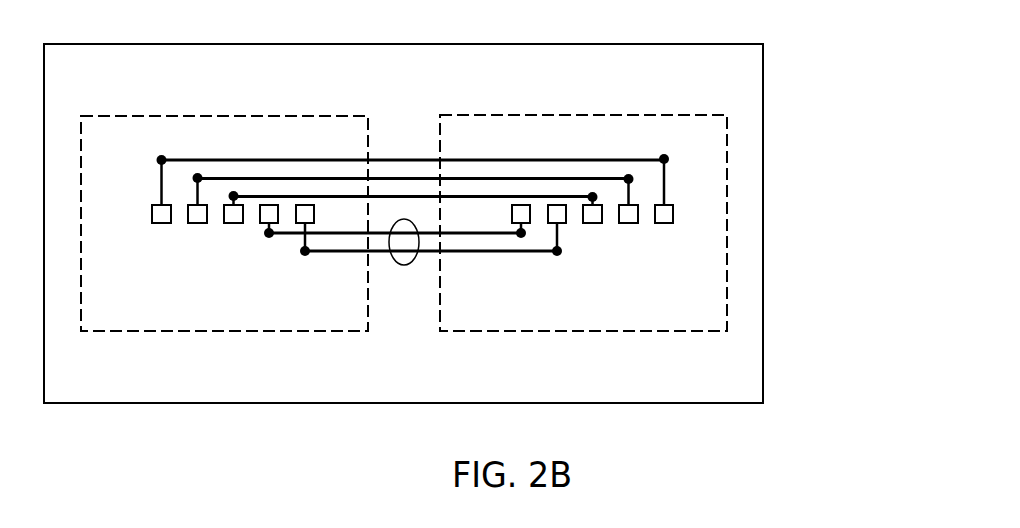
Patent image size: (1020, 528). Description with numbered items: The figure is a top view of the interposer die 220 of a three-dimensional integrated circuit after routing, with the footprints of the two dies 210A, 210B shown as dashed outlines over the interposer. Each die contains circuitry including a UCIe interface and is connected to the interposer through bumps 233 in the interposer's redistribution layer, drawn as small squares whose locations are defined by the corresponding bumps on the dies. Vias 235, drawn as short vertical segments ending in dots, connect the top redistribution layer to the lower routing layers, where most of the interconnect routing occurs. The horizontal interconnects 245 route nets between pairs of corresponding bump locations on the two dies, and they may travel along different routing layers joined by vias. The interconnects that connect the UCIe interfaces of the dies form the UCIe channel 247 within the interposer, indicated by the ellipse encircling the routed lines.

The interposer die 220 is at (403, 223).
The die 210A is at (224, 223).
The die 210B is at (583, 223).
The bumps 233 is at (673, 214).
The vias 235 is at (671, 157).
The interconnects 245 is at (665, 185).
The UCIe channel 247 is at (404, 265).